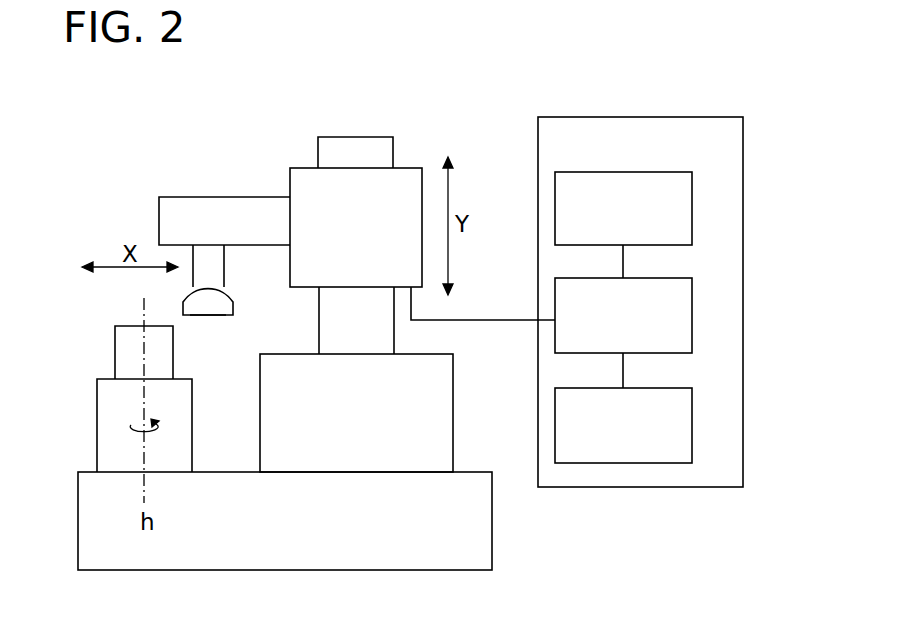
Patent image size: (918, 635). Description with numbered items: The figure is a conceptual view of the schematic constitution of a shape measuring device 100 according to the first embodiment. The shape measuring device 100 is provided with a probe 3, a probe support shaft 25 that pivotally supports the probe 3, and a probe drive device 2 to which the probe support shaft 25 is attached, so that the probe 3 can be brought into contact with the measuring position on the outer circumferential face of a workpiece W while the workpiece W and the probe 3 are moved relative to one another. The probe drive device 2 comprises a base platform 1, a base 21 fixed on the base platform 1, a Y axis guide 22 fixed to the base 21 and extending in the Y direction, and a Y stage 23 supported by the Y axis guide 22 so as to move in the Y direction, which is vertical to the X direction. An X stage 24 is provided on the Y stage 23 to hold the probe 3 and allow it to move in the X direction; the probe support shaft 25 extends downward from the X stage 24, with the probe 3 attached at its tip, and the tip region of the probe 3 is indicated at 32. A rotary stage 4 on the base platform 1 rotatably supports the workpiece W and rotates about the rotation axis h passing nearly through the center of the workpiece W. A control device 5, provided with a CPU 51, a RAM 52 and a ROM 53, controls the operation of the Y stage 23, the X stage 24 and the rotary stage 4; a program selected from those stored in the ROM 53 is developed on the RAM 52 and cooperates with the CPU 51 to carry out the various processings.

The shape measuring device 100 is at (341, 38).
The probe drive device 2 is at (181, 162).
The base platform 1 is at (418, 562).
The base 21 is at (448, 416).
The Y axis guide 22 is at (388, 344).
The Y stage 23 is at (406, 177).
The X stage 24 is at (246, 197).
The probe support shaft 25 is at (217, 265).
The probe 3 is at (228, 303).
The tool tip 32 is at (213, 318).
The rotary stage 4 is at (105, 436).
The workpiece W is at (120, 356).
The control device 5 is at (700, 117).
The CPU 51 is at (692, 318).
The RAM 52 is at (692, 428).
The ROM 53 is at (692, 212).